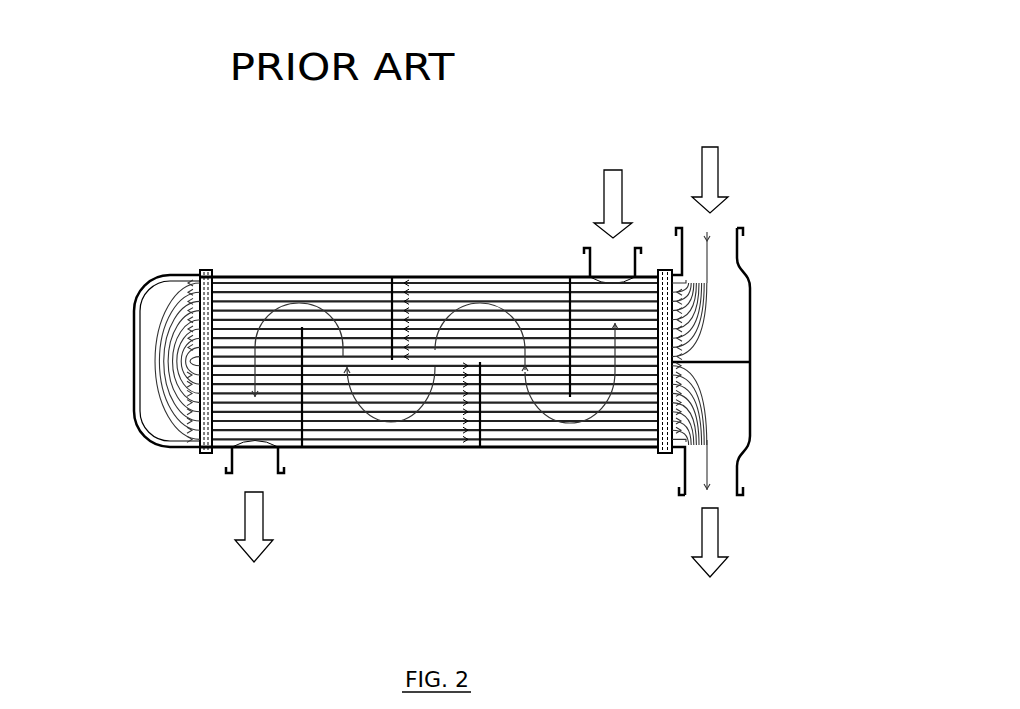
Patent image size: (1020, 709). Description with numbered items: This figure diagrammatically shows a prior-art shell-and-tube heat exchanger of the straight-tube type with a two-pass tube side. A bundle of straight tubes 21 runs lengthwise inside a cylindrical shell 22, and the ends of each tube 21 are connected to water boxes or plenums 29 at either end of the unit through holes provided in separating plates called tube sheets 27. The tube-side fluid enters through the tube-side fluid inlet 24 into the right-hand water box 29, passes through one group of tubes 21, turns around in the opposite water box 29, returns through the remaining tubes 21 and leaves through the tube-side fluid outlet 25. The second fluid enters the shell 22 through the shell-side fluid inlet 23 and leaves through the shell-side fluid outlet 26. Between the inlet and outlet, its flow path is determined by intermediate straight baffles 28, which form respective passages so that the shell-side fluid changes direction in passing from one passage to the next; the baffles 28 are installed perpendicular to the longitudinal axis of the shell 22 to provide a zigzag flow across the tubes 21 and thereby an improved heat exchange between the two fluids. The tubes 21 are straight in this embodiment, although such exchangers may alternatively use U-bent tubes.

The straight tube 21 is at (438, 283).
The shell 22 is at (538, 451).
The shell-side fluid in 23 is at (613, 184).
The tube-side fluid in 24 is at (714, 158).
The tube-side fluid out 25 is at (710, 565).
The shell-side fluid out 26 is at (254, 551).
The tube sheet 27 is at (205, 268).
The straight baffle 28 is at (303, 453).
The water box or plenum or bonnet 29 is at (143, 318).